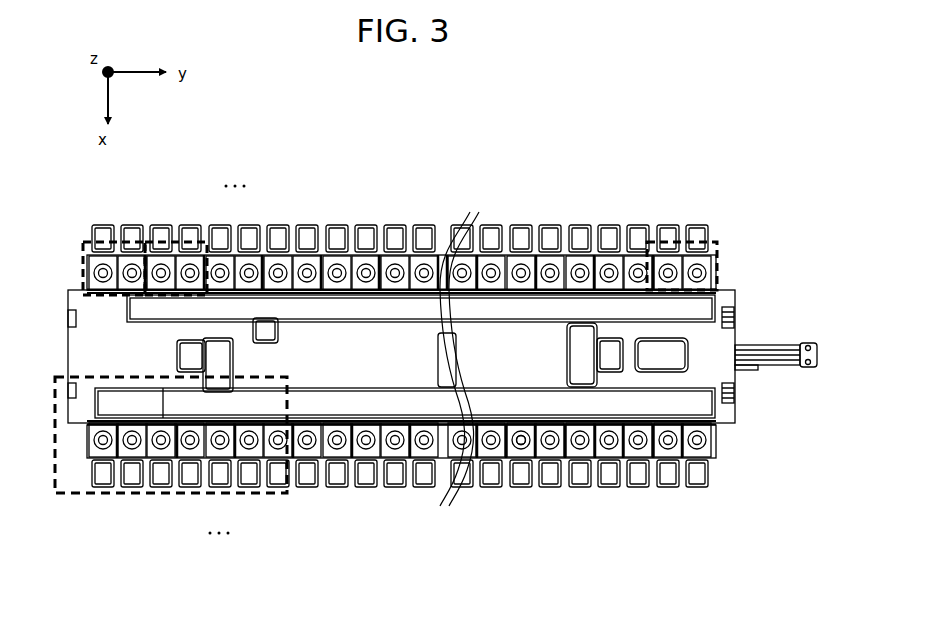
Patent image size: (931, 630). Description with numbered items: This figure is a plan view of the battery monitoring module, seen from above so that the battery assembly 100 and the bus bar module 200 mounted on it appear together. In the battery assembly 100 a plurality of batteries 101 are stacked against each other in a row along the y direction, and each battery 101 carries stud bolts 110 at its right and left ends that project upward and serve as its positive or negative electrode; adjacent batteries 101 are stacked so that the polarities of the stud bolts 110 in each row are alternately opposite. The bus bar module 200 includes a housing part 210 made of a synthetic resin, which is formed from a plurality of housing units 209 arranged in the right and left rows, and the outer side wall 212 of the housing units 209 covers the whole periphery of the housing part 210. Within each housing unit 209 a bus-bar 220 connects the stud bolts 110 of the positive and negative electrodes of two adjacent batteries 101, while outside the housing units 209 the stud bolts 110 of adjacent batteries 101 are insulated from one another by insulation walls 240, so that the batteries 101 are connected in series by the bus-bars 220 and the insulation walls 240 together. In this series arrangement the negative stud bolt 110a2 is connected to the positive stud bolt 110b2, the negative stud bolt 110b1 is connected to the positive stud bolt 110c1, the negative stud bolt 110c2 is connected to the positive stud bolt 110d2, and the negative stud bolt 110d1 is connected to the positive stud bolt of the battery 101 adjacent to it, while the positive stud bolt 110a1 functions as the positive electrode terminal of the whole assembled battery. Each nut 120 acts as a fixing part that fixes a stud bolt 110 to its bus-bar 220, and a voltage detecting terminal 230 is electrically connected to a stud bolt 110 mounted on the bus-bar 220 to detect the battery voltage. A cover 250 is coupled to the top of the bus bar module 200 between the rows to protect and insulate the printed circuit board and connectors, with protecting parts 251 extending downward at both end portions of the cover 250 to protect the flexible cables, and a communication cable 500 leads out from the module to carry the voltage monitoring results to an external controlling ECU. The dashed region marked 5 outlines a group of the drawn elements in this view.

The battery assembly 100 is at (742, 553).
The housing part 210 is at (758, 176).
The housing unit 209 is at (120, 243).
The bus-bar 220 is at (276, 262).
The voltage detecting terminal 230 is at (306, 262).
The insulation wall 240 is at (374, 458).
The outer side wall 212 is at (496, 458).
The stud bolt 110 is at (521, 441).
The nut 120 is at (524, 441).
The positive stud bolt 110a1 is at (698, 441).
The negative stud bolt 110b1 is at (668, 441).
The positive stud bolt 110c1 is at (639, 441).
The negative stud bolt 110d1 is at (610, 441).
The negative stud bolt 110a2 is at (697, 270).
The positive stud bolt 110b2 is at (667, 270).
The negative stud bolt 110c2 is at (637, 270).
The positive stud bolt 110d2 is at (608, 270).
The bus bar module 200 is at (745, 280).
The cover 250 is at (728, 340).
The protecting part 251 is at (728, 288).
The communication cable 500 is at (770, 366).
The battery 101 is at (104, 488).
The terminal group 5 is at (253, 494).